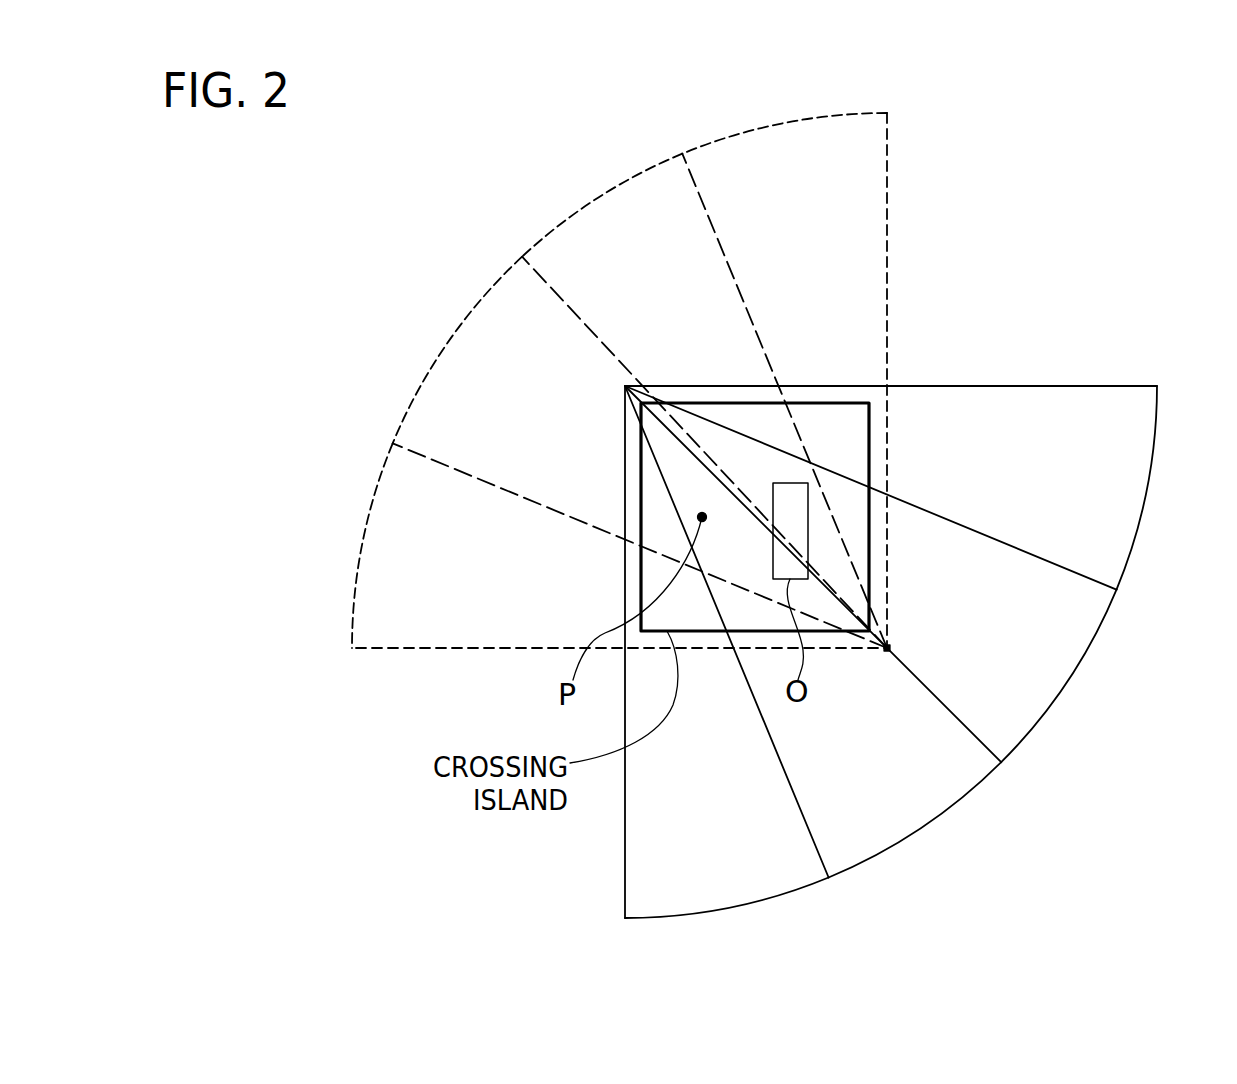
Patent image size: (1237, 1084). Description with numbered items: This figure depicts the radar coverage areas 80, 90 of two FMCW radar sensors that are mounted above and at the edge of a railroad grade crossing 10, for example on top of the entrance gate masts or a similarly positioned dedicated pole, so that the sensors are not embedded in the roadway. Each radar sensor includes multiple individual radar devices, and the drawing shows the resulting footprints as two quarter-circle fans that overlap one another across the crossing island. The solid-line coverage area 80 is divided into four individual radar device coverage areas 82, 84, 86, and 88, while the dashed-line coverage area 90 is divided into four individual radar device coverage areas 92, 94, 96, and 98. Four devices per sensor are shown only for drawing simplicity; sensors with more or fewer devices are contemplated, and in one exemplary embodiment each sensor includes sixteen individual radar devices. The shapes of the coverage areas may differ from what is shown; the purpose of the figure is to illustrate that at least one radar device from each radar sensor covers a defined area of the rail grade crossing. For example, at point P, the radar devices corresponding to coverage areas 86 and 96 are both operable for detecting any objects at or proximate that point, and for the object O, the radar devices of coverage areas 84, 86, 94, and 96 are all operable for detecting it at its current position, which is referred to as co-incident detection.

The railroad grade crossing 10 is at (1112, 186).
The coverage area 80 is at (1060, 386).
The individual radar device coverage area 82 is at (1130, 482).
The individual radar device coverage area 84 is at (1058, 667).
The individual radar device coverage area 86 is at (912, 803).
The individual radar device coverage area 88 is at (730, 888).
The coverage area 90 is at (890, 262).
The individual radar device coverage area 92 is at (862, 177).
The individual radar device coverage area 94 is at (596, 220).
The individual radar device coverage area 96 is at (468, 328).
The individual radar device coverage area 98 is at (383, 545).